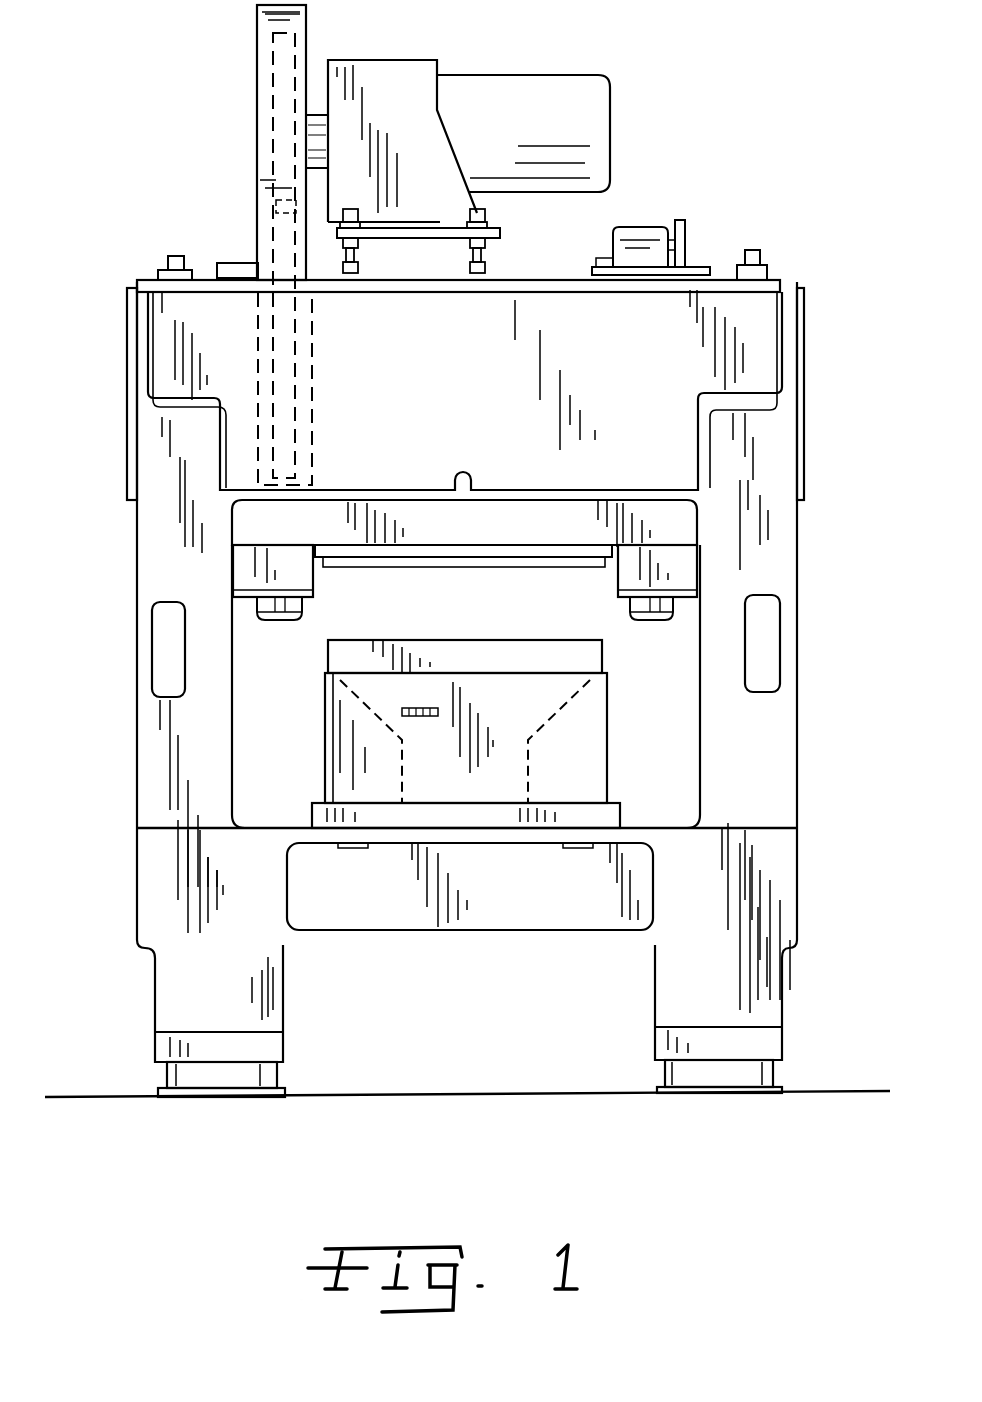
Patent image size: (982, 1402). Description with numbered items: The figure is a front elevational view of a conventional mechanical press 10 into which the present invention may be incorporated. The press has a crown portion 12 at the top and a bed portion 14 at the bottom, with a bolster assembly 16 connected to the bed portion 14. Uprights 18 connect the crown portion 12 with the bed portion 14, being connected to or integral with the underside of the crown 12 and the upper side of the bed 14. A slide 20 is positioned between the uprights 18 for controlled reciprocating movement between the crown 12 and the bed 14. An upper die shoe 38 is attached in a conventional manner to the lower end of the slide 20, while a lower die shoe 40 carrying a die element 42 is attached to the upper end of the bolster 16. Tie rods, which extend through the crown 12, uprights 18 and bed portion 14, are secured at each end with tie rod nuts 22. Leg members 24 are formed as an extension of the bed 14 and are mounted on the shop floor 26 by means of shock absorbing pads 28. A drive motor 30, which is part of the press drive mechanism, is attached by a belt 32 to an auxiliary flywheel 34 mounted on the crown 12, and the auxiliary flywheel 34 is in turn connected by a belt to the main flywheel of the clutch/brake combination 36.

The mechanical press 10 is at (188, 134).
The crown portion 12 is at (566, 349).
The bed portion 14 is at (212, 949).
The bolster assembly 16 is at (632, 802).
The uprights 18 is at (158, 543).
The slide 20 is at (459, 523).
The tie rod nuts 22 is at (160, 272).
The leg members 24 is at (158, 1072).
The shop floor 26 is at (492, 1157).
The shock absorbing pads 28 is at (268, 1095).
The drive motor 30 is at (520, 92).
The belt 32 is at (297, 342).
The auxiliary flywheel 34 is at (235, 365).
The clutch/brake combination 36 is at (313, 399).
The upper die shoe 38 is at (352, 584).
The lower die shoe 40 is at (624, 687).
The die element 42 is at (510, 652).